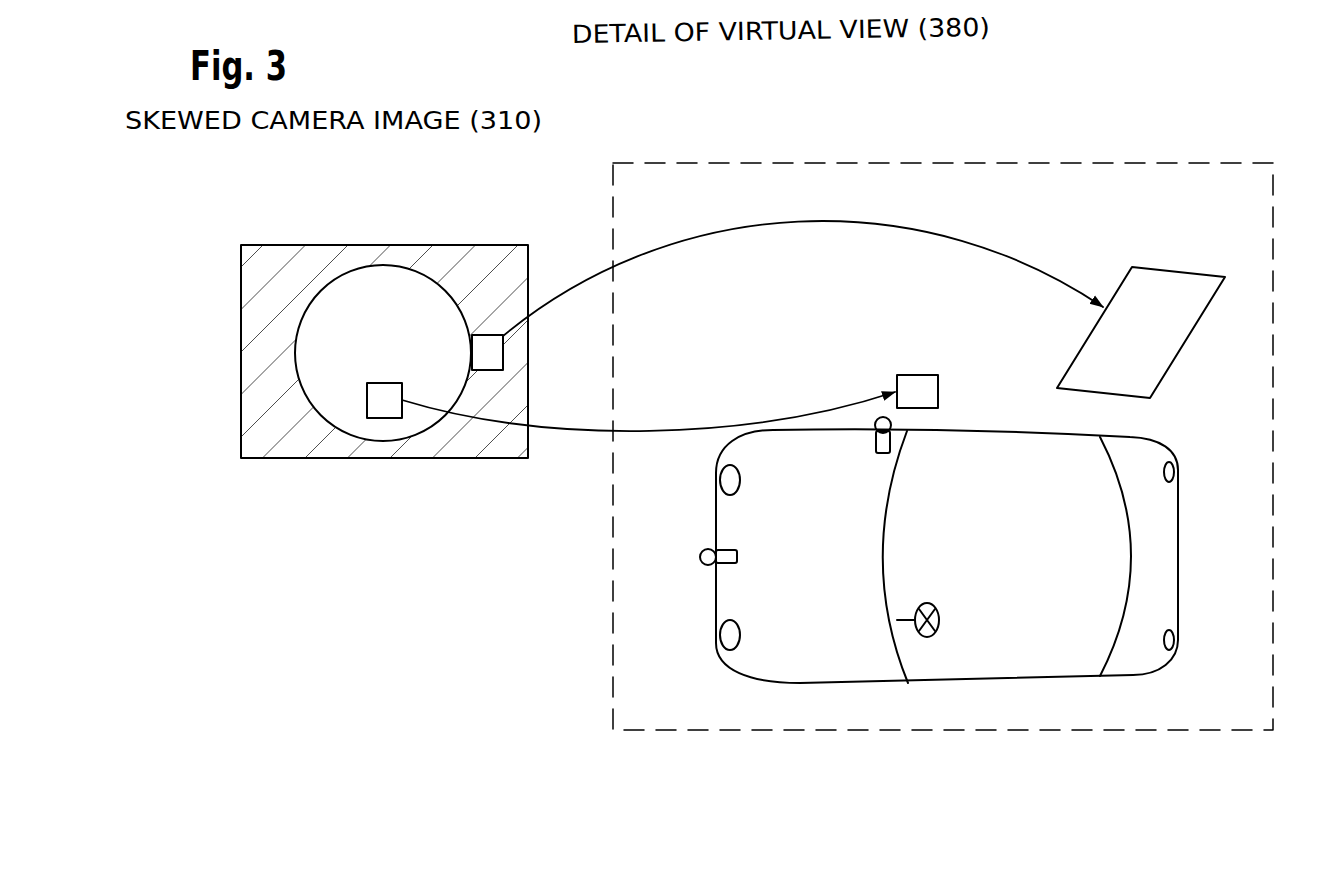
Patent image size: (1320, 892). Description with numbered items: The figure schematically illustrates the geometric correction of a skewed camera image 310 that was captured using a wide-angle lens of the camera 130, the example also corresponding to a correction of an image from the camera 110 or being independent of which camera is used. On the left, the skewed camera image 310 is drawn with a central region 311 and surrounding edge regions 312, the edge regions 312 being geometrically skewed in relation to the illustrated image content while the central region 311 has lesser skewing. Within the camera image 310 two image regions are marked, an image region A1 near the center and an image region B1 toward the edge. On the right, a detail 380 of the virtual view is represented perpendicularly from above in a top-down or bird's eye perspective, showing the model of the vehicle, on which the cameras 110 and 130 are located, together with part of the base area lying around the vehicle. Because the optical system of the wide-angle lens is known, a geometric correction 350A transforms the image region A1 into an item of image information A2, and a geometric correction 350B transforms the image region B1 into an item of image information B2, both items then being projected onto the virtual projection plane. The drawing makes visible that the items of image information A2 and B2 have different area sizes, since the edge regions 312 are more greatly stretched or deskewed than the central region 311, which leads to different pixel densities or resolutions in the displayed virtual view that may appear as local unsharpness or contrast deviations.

The skewed camera image 310 is at (258, 244).
The central region 311 is at (384, 283).
The edge regions 312 is at (303, 270).
The image region A1 is at (383, 419).
The image region B1 is at (503, 352).
The geometric correction 350A is at (690, 430).
The geometric correction 350B is at (770, 220).
The detail of the virtual view 380 is at (947, 163).
The item of image information A2 is at (917, 375).
The item of image information B2 is at (1180, 267).
The camera 110 is at (701, 556).
The camera 130 is at (893, 421).